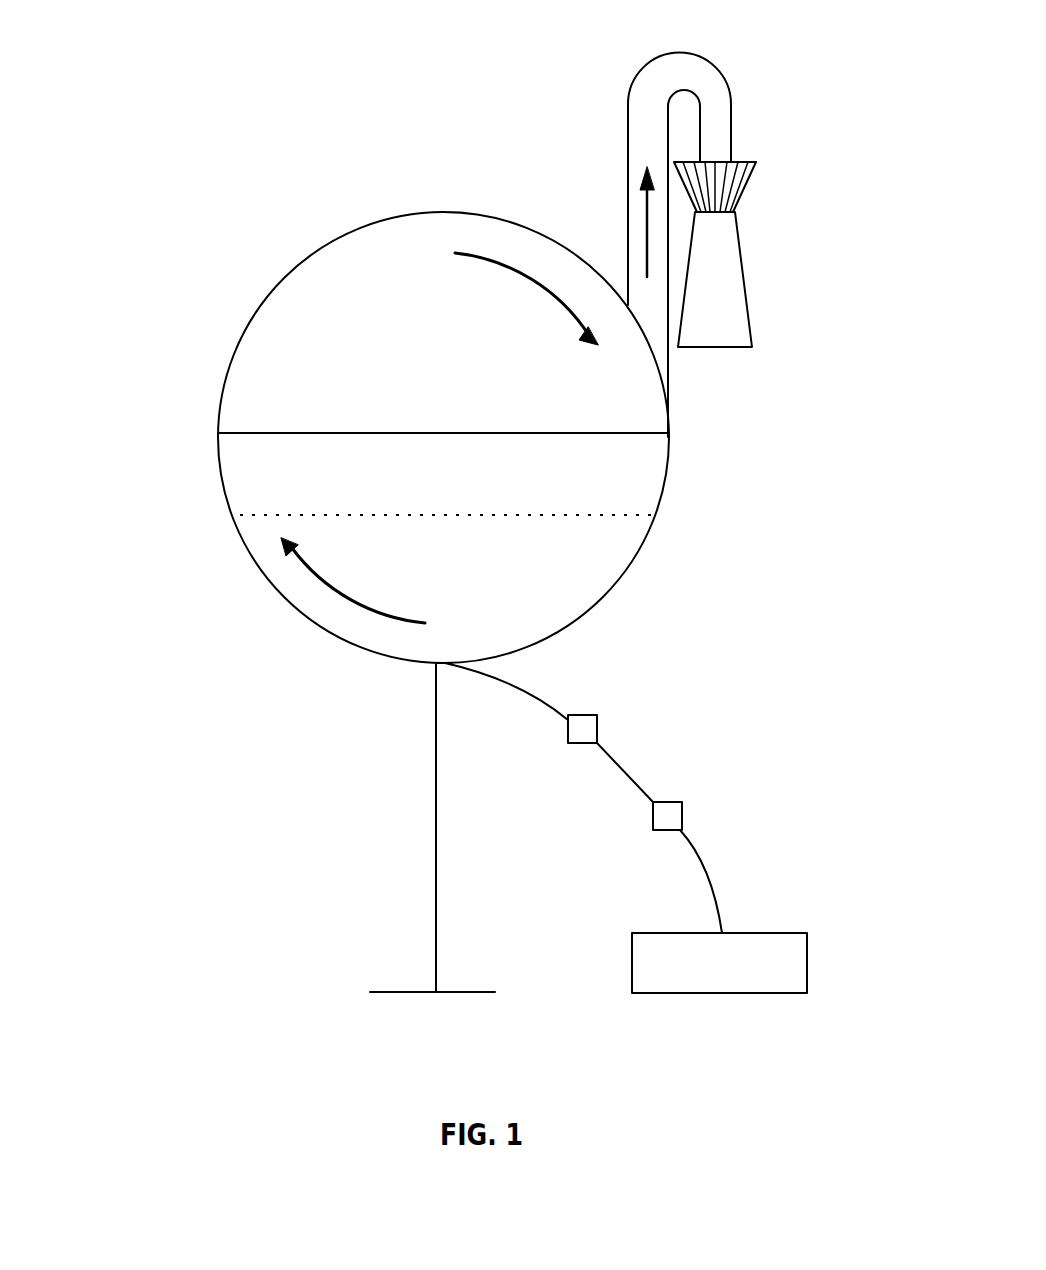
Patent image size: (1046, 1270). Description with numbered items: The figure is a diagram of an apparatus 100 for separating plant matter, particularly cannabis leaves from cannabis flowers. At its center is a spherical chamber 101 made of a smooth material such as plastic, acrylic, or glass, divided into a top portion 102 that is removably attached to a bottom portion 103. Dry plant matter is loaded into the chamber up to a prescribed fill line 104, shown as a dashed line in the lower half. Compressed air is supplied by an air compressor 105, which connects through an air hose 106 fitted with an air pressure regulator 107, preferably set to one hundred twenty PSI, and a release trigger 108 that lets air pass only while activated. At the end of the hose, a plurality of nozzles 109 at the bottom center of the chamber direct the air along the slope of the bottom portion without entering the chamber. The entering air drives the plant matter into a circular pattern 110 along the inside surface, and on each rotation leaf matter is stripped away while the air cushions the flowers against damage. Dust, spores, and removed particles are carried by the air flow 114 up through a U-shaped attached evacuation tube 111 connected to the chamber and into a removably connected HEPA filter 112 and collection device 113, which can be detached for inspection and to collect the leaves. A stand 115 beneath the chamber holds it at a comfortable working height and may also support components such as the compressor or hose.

The apparatus 100 is at (218, 218).
The chamber 101 is at (358, 226).
The top portion 102 is at (245, 383).
The bottom portion 103 is at (246, 463).
The fill line 104 is at (655, 516).
The air compressor 105 is at (807, 962).
The air hose 106 is at (707, 870).
The air pressure regulator 107 is at (682, 812).
The release trigger 108 is at (597, 730).
The plurality of nozzles 109 is at (445, 664).
The circular pattern 110 is at (475, 253).
The attached evacuation tube 111 is at (649, 65).
The HEPA filter 112 is at (747, 193).
The collection device 113 is at (747, 302).
The flow direction 114 is at (645, 203).
The stand 115 is at (436, 838).